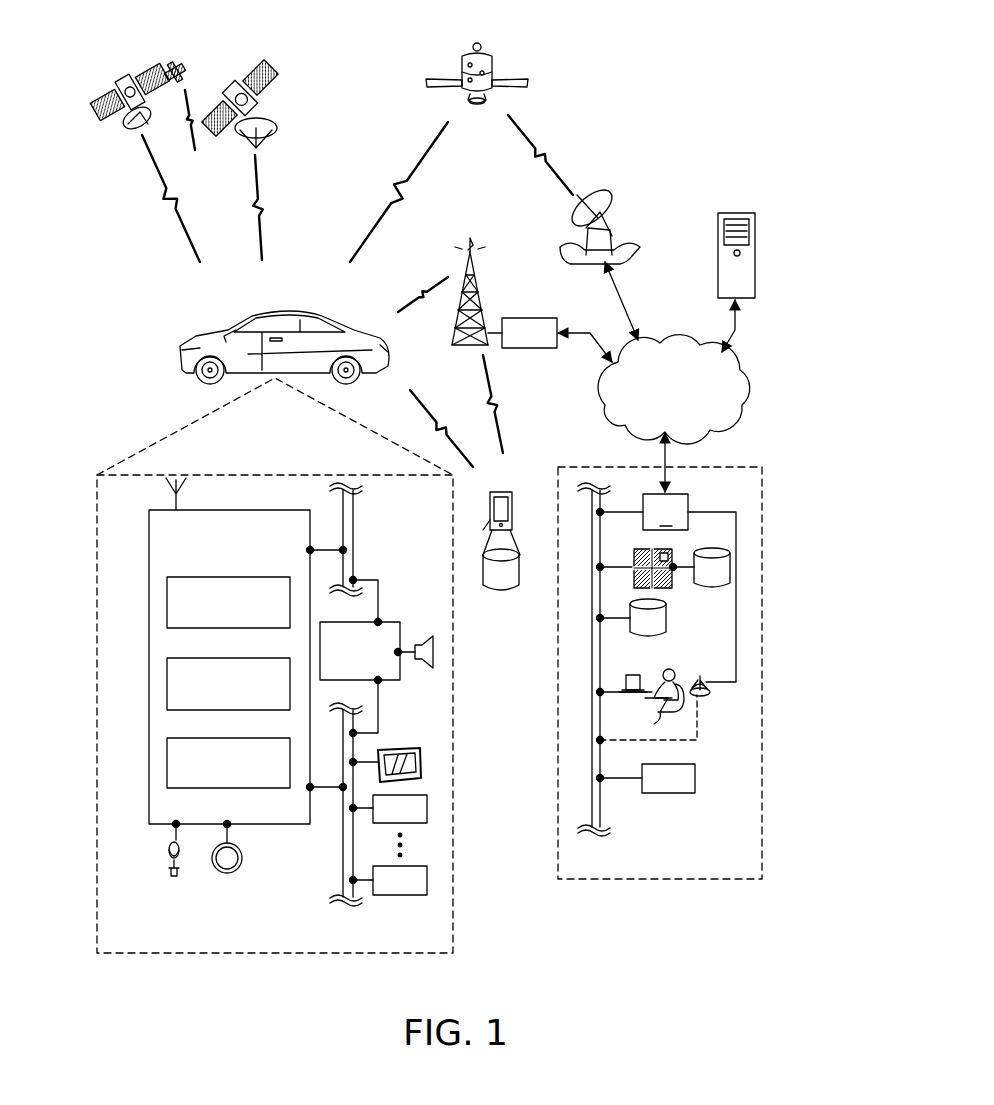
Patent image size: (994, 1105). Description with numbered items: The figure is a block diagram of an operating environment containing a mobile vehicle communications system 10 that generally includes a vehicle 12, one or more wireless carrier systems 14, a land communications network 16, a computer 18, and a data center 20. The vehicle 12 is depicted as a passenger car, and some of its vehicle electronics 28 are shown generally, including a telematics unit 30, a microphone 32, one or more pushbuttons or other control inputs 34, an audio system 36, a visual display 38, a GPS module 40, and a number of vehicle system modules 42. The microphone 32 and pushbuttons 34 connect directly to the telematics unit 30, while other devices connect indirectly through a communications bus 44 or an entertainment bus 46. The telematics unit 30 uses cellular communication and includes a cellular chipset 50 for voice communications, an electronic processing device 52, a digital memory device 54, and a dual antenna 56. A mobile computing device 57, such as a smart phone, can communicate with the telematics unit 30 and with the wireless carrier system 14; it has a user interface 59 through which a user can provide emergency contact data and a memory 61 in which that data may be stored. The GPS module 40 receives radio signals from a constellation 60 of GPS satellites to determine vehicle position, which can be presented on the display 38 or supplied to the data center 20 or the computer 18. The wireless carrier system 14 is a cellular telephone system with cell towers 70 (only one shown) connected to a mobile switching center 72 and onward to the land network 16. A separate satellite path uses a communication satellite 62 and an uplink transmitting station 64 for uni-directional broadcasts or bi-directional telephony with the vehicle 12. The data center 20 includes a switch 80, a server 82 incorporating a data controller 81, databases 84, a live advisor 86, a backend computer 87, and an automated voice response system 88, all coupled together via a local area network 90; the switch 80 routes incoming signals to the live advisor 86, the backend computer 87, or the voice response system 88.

The mobile vehicle communications system 10 is at (670, 90).
The vehicle 12 is at (180, 356).
The wireless carrier system 14 is at (455, 360).
The land communications network 16 is at (745, 390).
The computer 18 is at (758, 270).
The data center 20 is at (648, 882).
The vehicle electronics 28 is at (268, 955).
The telematics unit 30 is at (280, 510).
The microphone 32 is at (168, 856).
The pushbutton 34 is at (243, 855).
The audio system 36 is at (388, 620).
The visual display 38 is at (396, 748).
The GPS module 40 is at (428, 808).
The vehicle system module 42 is at (428, 878).
The communications bus 44 is at (343, 868).
The entertainment bus 46 is at (355, 532).
The cellular chipset 50 is at (167, 603).
The electronic processing device 52 is at (167, 683).
The digital memory device 54 is at (167, 763).
The dual antenna 56 is at (176, 498).
The mobile computing device 57 is at (490, 520).
The user interface 59 is at (506, 512).
The memory 61 is at (499, 593).
The constellation of GPS satellites 60 is at (300, 116).
The communication satellite 62 is at (492, 60).
The uplink transmitting station 64 is at (628, 246).
The cell tower 70 is at (480, 290).
The mobile switching center 72 is at (530, 350).
The switch 80 is at (667, 588).
The data controller 81 is at (712, 552).
The server 82 is at (634, 560).
The database 84 is at (668, 620).
The live advisor 86 is at (652, 722).
The backend computer 87 is at (630, 674).
The automated voice response system 88 is at (696, 775).
The local area network 90 is at (602, 806).